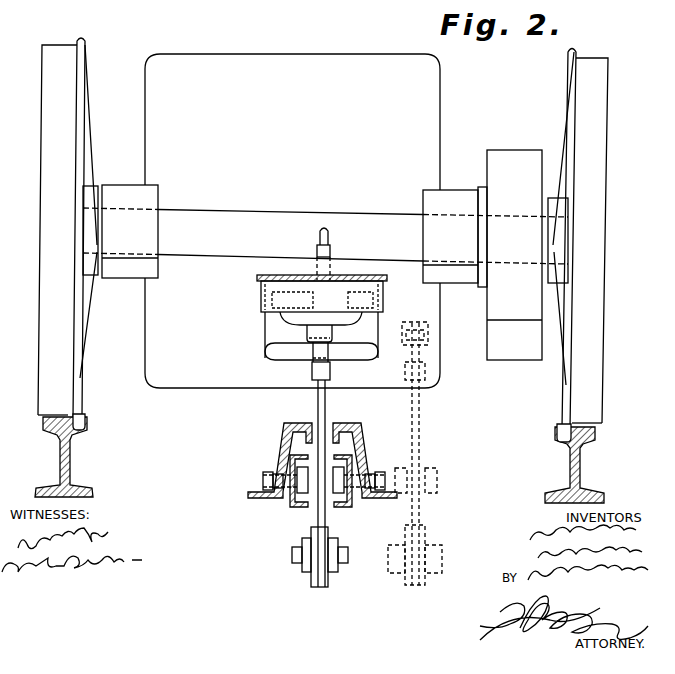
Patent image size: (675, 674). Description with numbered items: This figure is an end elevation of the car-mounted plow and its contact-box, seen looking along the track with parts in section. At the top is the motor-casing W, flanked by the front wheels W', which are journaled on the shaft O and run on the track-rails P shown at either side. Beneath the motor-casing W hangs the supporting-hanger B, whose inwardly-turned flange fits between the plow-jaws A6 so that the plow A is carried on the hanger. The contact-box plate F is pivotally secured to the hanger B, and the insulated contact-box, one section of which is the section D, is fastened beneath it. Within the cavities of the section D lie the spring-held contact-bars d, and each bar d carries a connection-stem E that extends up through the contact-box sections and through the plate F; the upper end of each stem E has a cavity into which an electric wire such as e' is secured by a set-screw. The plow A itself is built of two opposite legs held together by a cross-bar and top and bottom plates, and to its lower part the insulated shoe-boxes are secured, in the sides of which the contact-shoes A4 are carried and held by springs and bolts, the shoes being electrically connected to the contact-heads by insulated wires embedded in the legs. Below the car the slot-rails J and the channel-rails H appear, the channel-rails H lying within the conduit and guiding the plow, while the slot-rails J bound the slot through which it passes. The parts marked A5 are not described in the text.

The motor-casing W is at (292, 221).
The front wheels W' is at (323, 233).
The track-rails P is at (70, 458).
The shaft O is at (325, 236).
The electric wire e' is at (338, 228).
The connection-stem E is at (332, 250).
The contact-box plate F is at (257, 277).
The contact-box section D is at (322, 296).
The contact-bar d is at (353, 318).
The supporting-hanger B is at (321, 336).
The plow-jaws A6 is at (330, 373).
The plow A is at (318, 403).
The slot-rails J is at (283, 453).
The channel-rails H is at (293, 511).
The blocks A5 is at (324, 480).
The shoes A4 is at (356, 555).